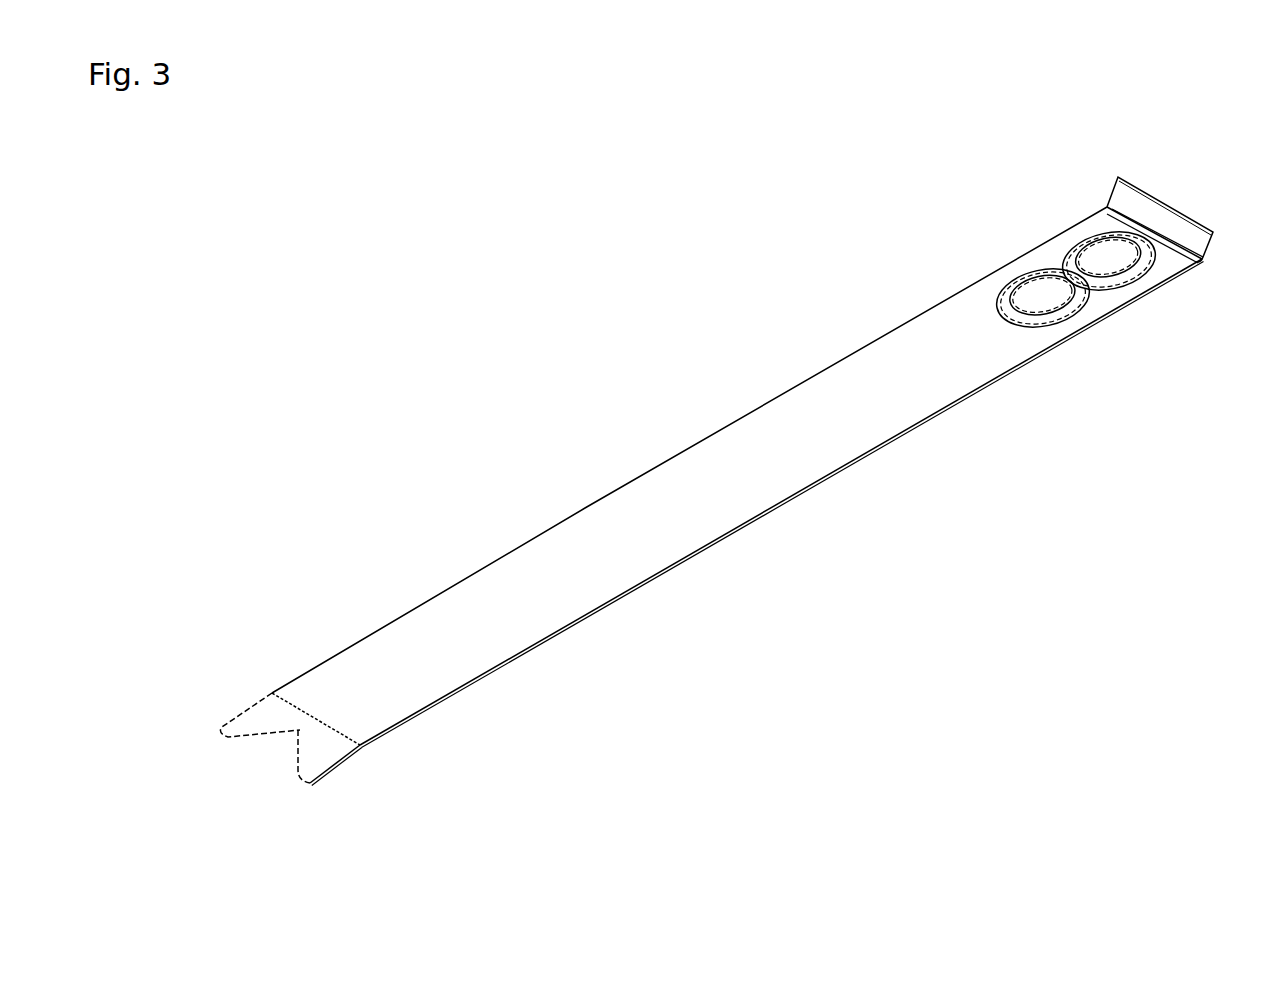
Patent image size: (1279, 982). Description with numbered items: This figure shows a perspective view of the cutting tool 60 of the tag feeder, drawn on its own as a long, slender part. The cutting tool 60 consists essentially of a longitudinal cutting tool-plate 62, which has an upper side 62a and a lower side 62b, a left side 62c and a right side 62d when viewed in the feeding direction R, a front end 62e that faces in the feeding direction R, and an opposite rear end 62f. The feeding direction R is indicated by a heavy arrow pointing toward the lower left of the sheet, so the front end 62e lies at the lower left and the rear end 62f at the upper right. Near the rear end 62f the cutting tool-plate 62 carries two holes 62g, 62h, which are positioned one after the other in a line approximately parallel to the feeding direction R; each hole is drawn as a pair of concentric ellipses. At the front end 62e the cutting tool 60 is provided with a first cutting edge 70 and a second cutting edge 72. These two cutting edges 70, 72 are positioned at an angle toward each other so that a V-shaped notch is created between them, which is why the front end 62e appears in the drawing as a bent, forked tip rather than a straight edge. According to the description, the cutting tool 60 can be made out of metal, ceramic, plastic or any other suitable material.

The cutting tool 60 is at (721, 501).
The cutting tool-plate 62 is at (721, 501).
The upper side 62a is at (755, 485).
The lower side 62b is at (412, 746).
The left side 62c is at (948, 408).
The right side 62d is at (689, 450).
The front end 62e is at (302, 695).
The rear end 62f is at (1162, 265).
The hole 62g is at (1032, 297).
The hole 62h is at (1107, 253).
The first cutting edge 70 is at (313, 750).
The second cutting edge 72 is at (248, 720).
The feeding direction R is at (423, 637).